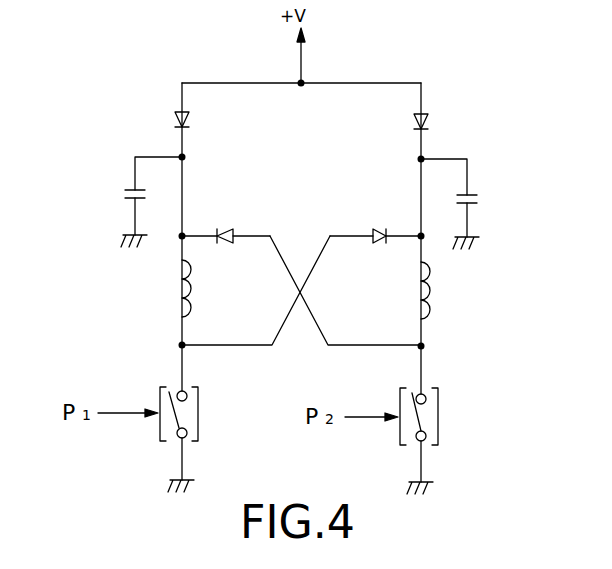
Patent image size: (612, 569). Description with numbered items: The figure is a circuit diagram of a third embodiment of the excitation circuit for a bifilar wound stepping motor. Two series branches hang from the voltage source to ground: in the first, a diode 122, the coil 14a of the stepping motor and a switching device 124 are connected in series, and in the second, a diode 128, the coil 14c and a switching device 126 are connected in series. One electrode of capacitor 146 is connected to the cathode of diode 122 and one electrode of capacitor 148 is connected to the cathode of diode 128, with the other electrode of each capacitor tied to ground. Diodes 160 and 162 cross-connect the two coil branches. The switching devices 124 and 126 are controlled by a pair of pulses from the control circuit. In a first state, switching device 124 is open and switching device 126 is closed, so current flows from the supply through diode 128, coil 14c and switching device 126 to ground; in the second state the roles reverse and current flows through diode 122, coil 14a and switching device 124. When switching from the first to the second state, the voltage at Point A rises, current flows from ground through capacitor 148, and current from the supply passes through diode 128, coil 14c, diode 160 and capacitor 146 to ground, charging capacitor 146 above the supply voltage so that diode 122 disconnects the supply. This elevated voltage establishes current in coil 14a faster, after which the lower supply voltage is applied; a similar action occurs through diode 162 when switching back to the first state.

The diode 122 is at (187, 125).
The diode 128 is at (427, 128).
The capacitor 146 is at (132, 186).
The capacitor 148 is at (468, 190).
The diode 160 is at (221, 229).
The diode 162 is at (384, 229).
The coil 14a is at (189, 290).
The coil 14c is at (420, 292).
The switching device 124 is at (158, 437).
The switching device 126 is at (440, 436).
The Point A is at (426, 351).